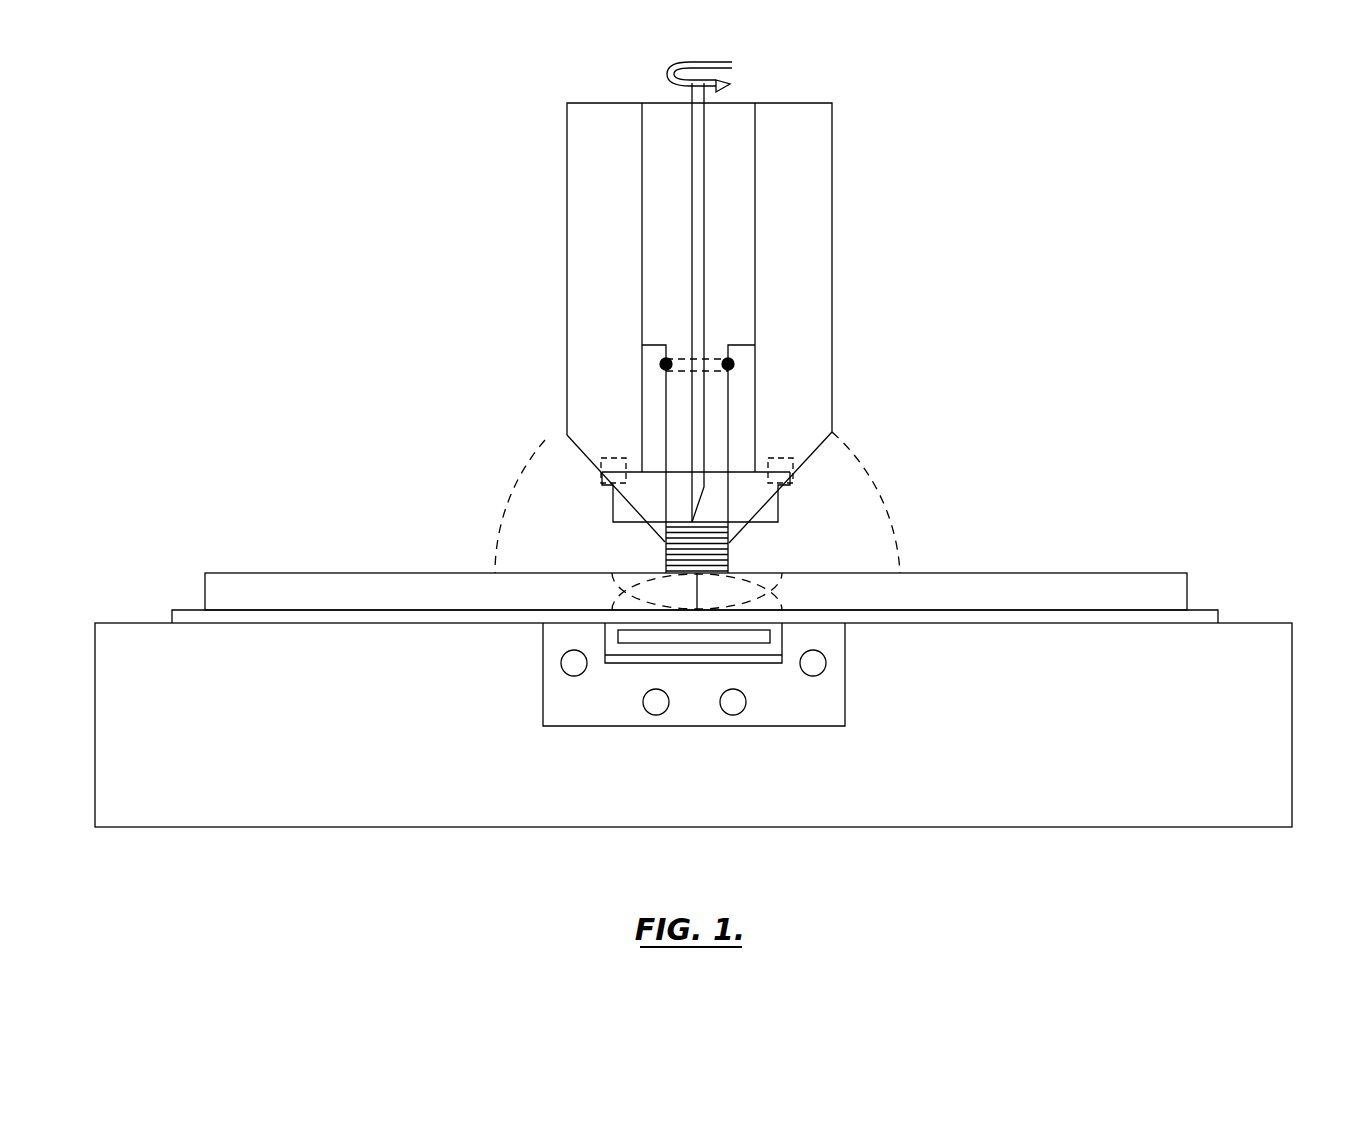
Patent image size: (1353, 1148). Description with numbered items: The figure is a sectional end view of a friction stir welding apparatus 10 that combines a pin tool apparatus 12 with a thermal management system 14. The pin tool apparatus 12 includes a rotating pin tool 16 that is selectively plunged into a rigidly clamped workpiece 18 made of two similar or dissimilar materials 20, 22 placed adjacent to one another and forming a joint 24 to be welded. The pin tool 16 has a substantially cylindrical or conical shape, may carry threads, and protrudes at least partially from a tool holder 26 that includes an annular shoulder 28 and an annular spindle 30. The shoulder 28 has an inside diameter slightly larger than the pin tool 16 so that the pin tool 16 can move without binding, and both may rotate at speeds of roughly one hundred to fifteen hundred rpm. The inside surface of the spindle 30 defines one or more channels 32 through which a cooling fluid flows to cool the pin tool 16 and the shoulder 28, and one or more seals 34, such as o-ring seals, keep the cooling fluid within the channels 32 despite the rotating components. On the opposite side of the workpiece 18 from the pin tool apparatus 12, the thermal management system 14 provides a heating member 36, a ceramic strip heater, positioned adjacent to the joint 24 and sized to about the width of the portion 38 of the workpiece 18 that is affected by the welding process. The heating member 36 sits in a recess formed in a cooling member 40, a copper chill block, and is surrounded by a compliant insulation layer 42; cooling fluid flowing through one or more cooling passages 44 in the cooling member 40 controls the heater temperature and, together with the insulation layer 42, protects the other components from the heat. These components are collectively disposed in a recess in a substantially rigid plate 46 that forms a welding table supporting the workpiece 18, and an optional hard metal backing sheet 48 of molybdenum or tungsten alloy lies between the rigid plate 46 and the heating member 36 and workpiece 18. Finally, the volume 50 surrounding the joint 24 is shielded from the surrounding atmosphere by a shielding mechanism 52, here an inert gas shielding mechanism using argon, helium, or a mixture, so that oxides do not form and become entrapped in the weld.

The friction stir welding apparatus 10 is at (1065, 308).
The pin tool apparatus 12 is at (853, 152).
The thermal management system 14 is at (810, 598).
The pin tool 16 is at (778, 486).
The workpiece 18 is at (1098, 575).
The material 20 is at (1063, 573).
The material 22 is at (332, 568).
The joint 24 is at (602, 466).
The tool holder 26 is at (548, 267).
The shoulder 28 is at (760, 471).
The spindle 30 is at (832, 267).
The channel 32 is at (708, 130).
The seal 34 is at (740, 355).
The heating member 36 is at (747, 642).
The portion of the workpiece affected by the welding process 38 is at (627, 565).
The cooling member 40 is at (772, 728).
The compliant insulation layer 42 is at (627, 663).
The cooling passage 44 is at (692, 717).
The substantially rigid plate 46 is at (292, 827).
The hard metal backing sheet 48 is at (1128, 613).
The volume 50 is at (569, 548).
The shielding mechanism 52 is at (537, 440).